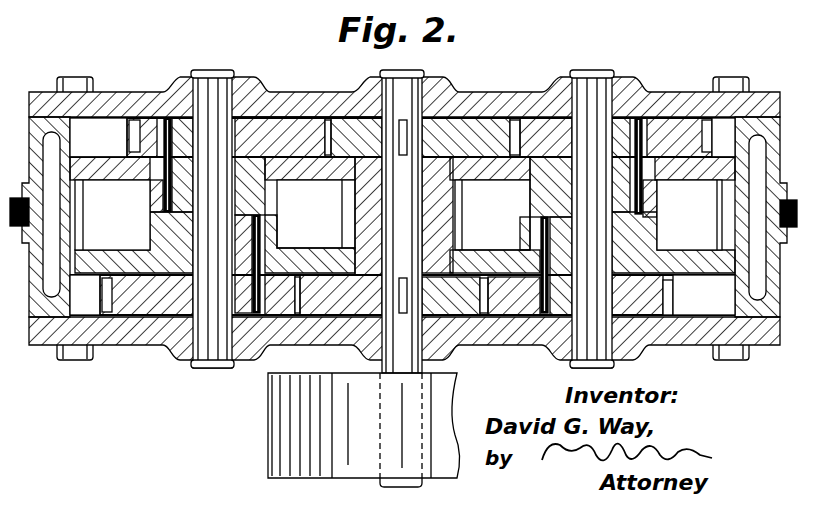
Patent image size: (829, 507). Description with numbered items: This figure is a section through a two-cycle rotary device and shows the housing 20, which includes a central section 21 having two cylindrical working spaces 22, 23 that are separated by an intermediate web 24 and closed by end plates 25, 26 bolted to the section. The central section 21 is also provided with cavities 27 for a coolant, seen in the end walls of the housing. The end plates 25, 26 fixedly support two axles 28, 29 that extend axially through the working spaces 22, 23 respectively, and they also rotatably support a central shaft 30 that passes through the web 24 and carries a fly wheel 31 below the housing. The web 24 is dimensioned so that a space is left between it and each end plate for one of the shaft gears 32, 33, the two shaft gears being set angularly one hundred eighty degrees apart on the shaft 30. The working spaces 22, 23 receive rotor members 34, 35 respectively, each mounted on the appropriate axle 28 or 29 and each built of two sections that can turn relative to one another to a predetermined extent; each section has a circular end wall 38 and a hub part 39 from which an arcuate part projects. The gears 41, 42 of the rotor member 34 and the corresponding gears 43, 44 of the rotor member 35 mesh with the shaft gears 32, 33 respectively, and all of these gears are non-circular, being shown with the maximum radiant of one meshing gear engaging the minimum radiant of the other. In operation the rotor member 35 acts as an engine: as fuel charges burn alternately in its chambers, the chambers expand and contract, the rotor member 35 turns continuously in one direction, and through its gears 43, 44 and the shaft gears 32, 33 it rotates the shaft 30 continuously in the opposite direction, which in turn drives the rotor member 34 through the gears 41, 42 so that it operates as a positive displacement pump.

The housing 20 is at (541, 88).
The central section 21 is at (40, 214).
The working space 22 is at (113, 125).
The working space 23 is at (721, 128).
The intermediate web 24 is at (442, 172).
The end plate 25 is at (148, 338).
The end plate 26 is at (311, 95).
The cavity 27 is at (53, 287).
The axle 28 is at (218, 368).
The axle 29 is at (605, 74).
The shaft 30 is at (424, 84).
The fly wheel 31 is at (283, 438).
The shaft gear 32 is at (343, 130).
The shaft gear 33 is at (333, 300).
The rotor member 34 is at (118, 152).
The rotor member 35 is at (697, 280).
The circular end wall 38 is at (85, 157).
The hub part 39 is at (153, 233).
The gear 41 is at (266, 113).
The gear 42 is at (137, 298).
The gear 43 is at (674, 130).
The gear 44 is at (518, 307).